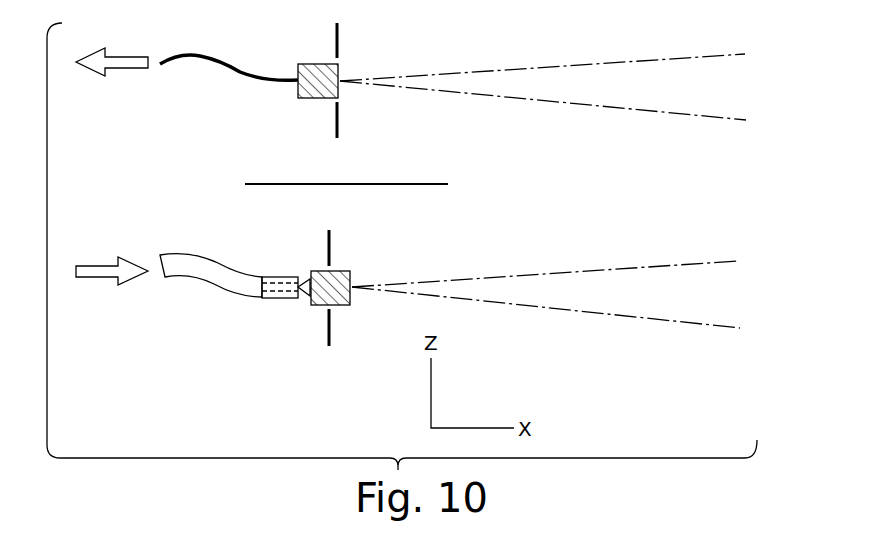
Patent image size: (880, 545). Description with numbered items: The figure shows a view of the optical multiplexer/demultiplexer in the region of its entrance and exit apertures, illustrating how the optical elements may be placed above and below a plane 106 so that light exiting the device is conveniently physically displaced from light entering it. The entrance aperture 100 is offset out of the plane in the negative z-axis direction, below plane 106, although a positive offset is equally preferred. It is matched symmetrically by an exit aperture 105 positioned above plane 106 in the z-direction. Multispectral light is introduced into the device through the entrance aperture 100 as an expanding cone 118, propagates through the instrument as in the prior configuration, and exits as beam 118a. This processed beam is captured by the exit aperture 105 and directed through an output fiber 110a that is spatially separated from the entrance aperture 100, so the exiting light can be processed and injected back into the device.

The entrance aperture 100 is at (327, 326).
The exit aperture 105 is at (335, 124).
The plane 106 is at (400, 186).
The output fiber 110a is at (216, 60).
The expanding cone 118 is at (660, 320).
The beam 118a is at (632, 108).